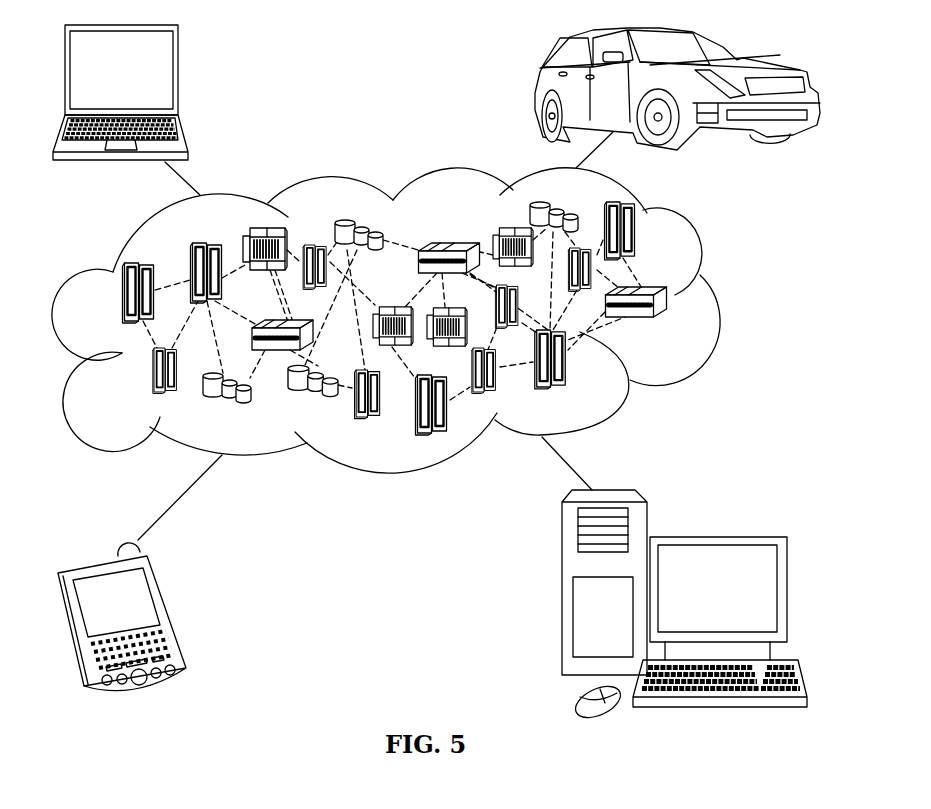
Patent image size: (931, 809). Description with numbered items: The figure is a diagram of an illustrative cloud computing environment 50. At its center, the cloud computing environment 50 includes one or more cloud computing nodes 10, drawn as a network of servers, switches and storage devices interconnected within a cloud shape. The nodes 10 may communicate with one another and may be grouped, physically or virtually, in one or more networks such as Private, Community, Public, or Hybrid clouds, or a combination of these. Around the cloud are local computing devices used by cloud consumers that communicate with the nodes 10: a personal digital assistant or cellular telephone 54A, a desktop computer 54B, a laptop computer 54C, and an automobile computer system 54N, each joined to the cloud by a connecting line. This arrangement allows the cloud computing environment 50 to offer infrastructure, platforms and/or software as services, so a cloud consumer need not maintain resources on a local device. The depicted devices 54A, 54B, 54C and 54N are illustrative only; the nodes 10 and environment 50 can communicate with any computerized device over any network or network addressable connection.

The cloud computing environment 50 is at (718, 300).
The cloud computing node 10 is at (676, 327).
The personal digital assistant or cellular telephone 54A is at (168, 612).
The desktop computer 54B is at (715, 536).
The laptop computer 54C is at (178, 75).
The automobile computer system 54N is at (538, 90).